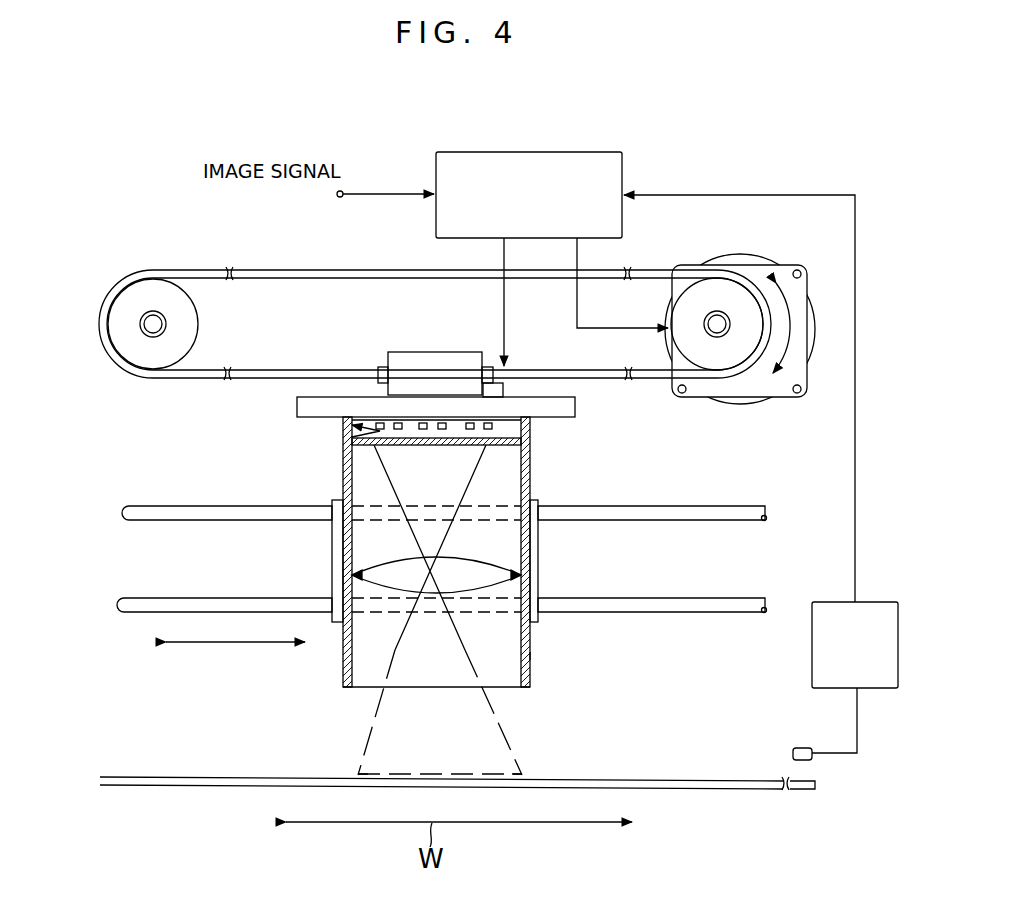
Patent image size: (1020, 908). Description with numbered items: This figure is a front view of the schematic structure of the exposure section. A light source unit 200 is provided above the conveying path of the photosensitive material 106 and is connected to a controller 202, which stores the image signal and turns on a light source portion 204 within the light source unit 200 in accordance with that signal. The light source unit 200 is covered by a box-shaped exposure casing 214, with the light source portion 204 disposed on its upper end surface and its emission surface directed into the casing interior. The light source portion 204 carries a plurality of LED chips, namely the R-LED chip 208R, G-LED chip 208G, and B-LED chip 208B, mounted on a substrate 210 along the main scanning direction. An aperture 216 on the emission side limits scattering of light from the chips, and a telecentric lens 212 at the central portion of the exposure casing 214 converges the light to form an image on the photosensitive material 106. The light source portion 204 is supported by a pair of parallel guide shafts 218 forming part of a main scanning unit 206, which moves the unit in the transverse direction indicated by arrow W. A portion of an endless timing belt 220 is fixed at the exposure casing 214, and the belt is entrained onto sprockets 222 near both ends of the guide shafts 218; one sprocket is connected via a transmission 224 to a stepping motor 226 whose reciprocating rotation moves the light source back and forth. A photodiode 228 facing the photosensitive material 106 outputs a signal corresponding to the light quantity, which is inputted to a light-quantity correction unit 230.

The photosensitive material 106 is at (693, 778).
The light source unit 200 is at (549, 466).
The controller 202 is at (622, 172).
The light source portion 204 is at (345, 438).
The main scanning unit 206 is at (176, 394).
The R-LED chip 208R is at (398, 430).
The G-LED chip 208G is at (443, 431).
The B-LED chip 208B is at (490, 430).
The substrate 210 is at (523, 431).
The telecentric lens 212 is at (392, 581).
The exposure casing 214 is at (530, 652).
The aperture 216 is at (343, 457).
The guide shafts 218 is at (670, 598).
The timing belt 220 is at (322, 369).
The sprockets 222 is at (197, 324).
The transmission 224 is at (763, 390).
The stepping motor 226 is at (735, 405).
The photodiode 228 is at (813, 760).
The light-quantity correction unit 230 is at (837, 688).